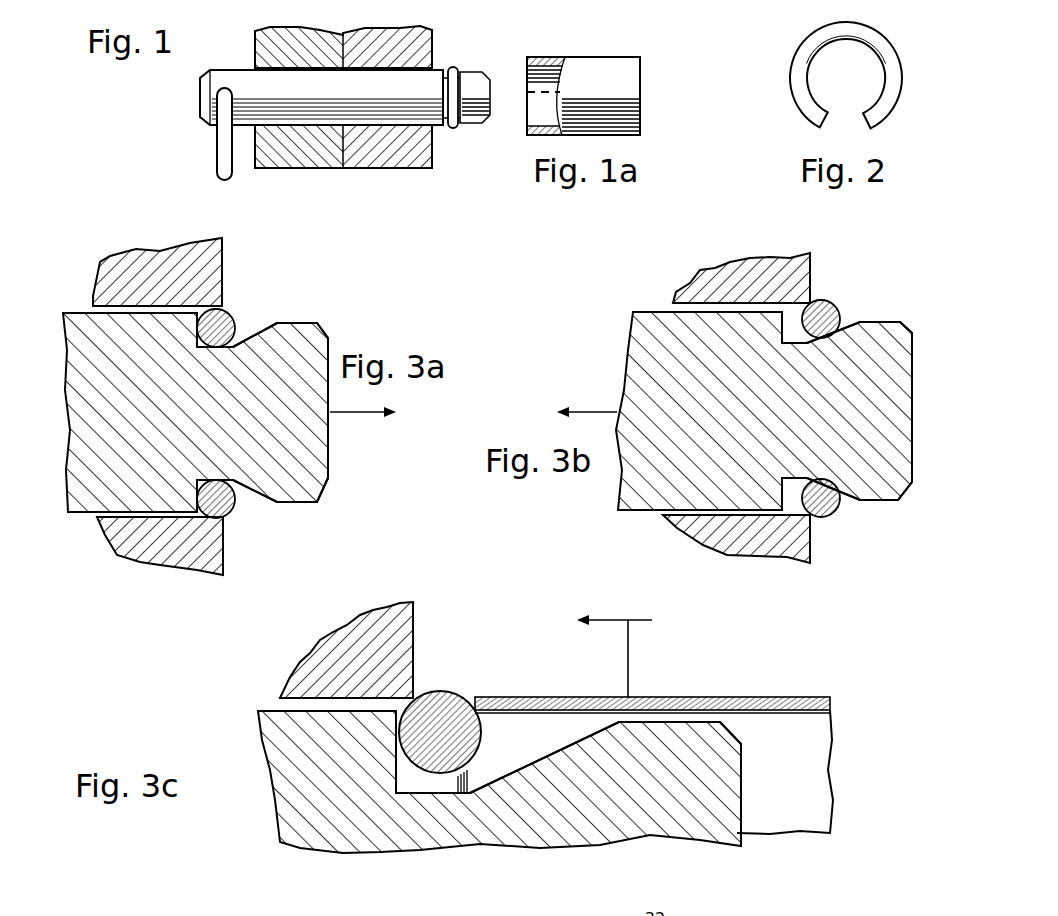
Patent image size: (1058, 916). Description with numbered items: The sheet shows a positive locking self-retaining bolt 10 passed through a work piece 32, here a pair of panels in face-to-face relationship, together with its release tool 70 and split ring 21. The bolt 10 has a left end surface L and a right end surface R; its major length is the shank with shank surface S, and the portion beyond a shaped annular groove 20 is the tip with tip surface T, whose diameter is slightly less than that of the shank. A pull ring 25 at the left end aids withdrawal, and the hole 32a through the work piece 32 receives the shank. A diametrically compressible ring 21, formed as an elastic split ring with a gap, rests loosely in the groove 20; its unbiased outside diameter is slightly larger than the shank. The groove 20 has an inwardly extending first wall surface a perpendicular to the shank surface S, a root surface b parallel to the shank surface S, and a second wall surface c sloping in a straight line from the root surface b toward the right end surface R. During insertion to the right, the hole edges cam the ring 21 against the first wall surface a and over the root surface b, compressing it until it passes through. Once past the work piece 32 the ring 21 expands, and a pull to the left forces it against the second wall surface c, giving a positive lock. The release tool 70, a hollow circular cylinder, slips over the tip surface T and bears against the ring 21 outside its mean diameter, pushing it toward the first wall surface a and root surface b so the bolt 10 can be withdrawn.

In FIG. 1, the bolt 10 is at (271, 97).
In FIG. 3A, the bolt 10 is at (76, 318).
In FIG. 3B, the bolt 10 is at (633, 357).
In FIG. 3C, the bolt 10 is at (272, 810).
In FIG. 1, the annular groove 20 is at (464, 62).
In FIG. 3A, the annular groove 20 is at (254, 324).
In FIG. 3B, the annular groove 20 is at (850, 316).
In FIG. 3C, the annular groove 20 is at (562, 740).
In FIG. 1, the ring 21 is at (452, 129).
In FIG. 2, the ring 21 is at (797, 57).
In FIG. 3A, the ring 21 is at (224, 311).
In FIG. 3B, the ring 21 is at (822, 300).
In FIG. 3C, the ring 21 is at (433, 695).
In FIG. 1, the pull ring 25 is at (218, 162).
In FIG. 1, the work piece 32 is at (371, 168).
In FIG. 3A, the work piece 32 is at (158, 252).
In FIG. 3B, the work piece 32 is at (735, 270).
In FIG. 3C, the work piece 32 is at (375, 617).
In FIG. 1, the bore in plates 32a is at (371, 70).
In FIG. 1A, the release tool 70 is at (591, 90).
In FIG. 3C, the release tool 70 is at (722, 697).
In FIG. 1, the shank surface S is at (238, 70).
In FIG. 3A, the shank surface S is at (86, 519).
In FIG. 3B, the shank surface S is at (642, 310).
In FIG. 3C, the shank surface S is at (270, 705).
In FIG. 1, the tip surface T is at (478, 72).
In FIG. 3A, the tip surface T is at (304, 503).
In FIG. 3B, the tip surface T is at (895, 320).
In FIG. 3C, the tip surface T is at (668, 720).
In FIG. 1, the left end surface L is at (197, 102).
In FIG. 1, the right end surface R is at (490, 102).
In FIG. 3A, the right end surface R is at (330, 451).
In FIG. 3B, the right end surface R is at (915, 412).
In FIG. 3C, the right end surface R is at (740, 795).
In FIG. 3A, the first wall surface a is at (196, 560).
In FIG. 3B, the first wall surface a is at (790, 540).
In FIG. 3C, the first wall surface a is at (400, 782).
In FIG. 3A, the root surface b is at (235, 502).
In FIG. 3B, the root surface b is at (818, 518).
In FIG. 3C, the root surface b is at (445, 795).
In FIG. 3A, the second wall surface c is at (255, 487).
In FIG. 3B, the second wall surface c is at (848, 498).
In FIG. 3C, the second wall surface c is at (540, 758).